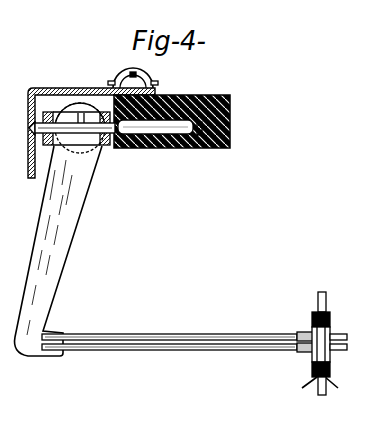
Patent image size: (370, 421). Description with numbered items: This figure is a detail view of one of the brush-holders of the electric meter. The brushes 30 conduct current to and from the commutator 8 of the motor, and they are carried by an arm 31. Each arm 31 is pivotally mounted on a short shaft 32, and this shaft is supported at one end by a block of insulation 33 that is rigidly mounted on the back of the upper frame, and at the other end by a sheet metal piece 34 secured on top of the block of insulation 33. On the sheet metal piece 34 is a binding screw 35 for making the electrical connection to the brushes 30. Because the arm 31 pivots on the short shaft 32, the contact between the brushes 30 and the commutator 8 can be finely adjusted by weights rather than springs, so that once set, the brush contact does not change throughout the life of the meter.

The commutator 8 is at (330, 330).
The brushes 30 is at (205, 334).
The arms 31 is at (48, 267).
The short shaft 32 is at (80, 146).
The block of insulation 33 is at (155, 148).
The sheet metal piece 34 is at (72, 88).
The binding screw 35 is at (124, 73).